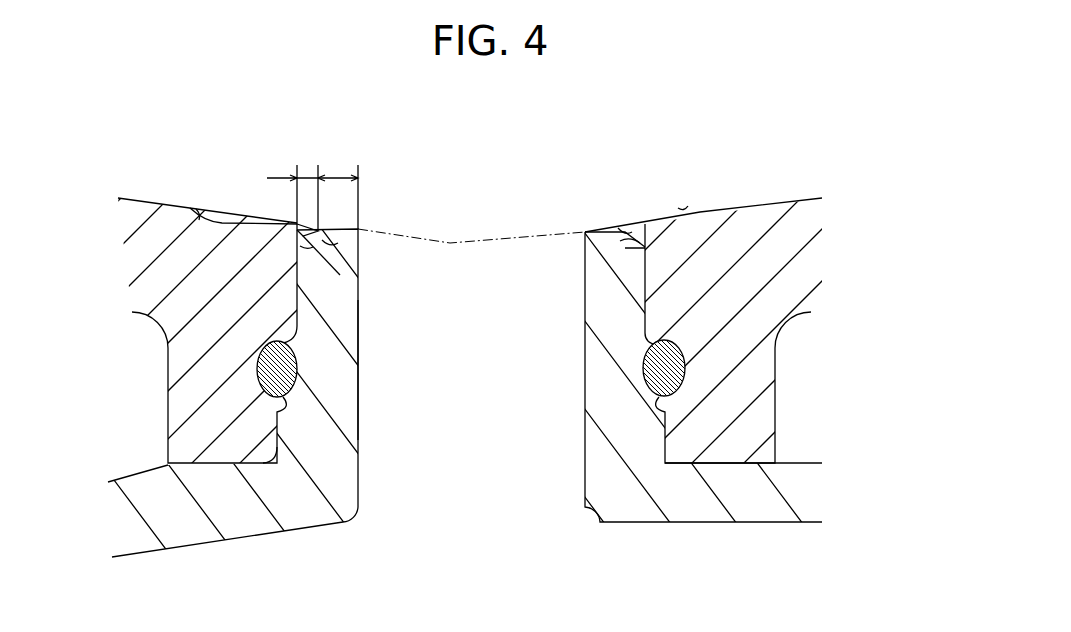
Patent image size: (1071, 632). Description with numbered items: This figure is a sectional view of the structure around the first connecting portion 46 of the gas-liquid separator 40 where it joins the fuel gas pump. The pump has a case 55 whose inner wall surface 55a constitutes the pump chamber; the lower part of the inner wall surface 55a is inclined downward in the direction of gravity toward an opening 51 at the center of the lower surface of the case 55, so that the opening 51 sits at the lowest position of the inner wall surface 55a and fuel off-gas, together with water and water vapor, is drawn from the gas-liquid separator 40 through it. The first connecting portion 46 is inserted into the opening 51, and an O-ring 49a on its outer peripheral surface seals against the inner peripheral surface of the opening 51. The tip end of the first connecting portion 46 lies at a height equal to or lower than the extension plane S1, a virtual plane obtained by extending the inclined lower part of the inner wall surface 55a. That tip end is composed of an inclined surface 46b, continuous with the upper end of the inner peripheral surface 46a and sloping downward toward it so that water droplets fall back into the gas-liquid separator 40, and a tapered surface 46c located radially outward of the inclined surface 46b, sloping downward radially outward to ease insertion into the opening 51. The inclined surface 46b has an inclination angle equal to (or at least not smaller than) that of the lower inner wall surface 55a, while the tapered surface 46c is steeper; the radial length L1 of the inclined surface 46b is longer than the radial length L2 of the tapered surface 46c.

The gas-liquid separator 40 is at (797, 488).
The first connecting portion 46 is at (606, 332).
The inner peripheral surface 46a is at (360, 370).
The inclined surface 46b is at (332, 230).
The tapered surface 46c is at (297, 213).
The O-ring 49a is at (258, 370).
The opening 51 is at (522, 172).
The case 55 is at (795, 268).
The inner wall surface 55a is at (713, 208).
The extension plane S1 is at (430, 240).
The radial length of the inclined surface L1 is at (338, 178).
The radial length of the tapered surface L2 is at (308, 178).